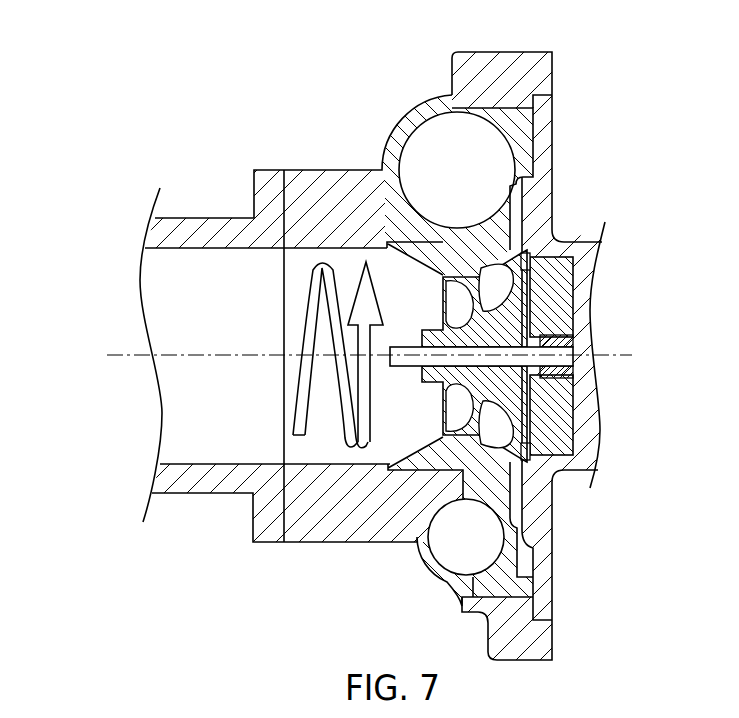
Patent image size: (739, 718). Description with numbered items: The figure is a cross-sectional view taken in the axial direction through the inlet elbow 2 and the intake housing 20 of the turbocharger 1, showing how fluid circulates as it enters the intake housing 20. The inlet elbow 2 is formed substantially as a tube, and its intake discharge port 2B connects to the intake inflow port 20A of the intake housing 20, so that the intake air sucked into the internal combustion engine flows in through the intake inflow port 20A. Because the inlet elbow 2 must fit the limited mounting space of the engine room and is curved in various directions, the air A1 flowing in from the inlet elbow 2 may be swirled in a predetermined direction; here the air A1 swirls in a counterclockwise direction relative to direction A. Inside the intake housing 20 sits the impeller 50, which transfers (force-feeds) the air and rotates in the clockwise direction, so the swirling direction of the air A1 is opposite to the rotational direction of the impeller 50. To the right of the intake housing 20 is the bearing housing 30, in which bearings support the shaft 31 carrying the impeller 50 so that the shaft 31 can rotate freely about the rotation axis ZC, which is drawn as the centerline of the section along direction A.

The turbocharger 1 is at (415, 76).
The inlet elbow 2 is at (197, 214).
The intake housing 20 is at (387, 139).
The air A1 is at (299, 310).
The rotation axis ZC is at (133, 351).
The direction A is at (93, 355).
The impeller 50 is at (441, 396).
The intake discharge port 2B is at (226, 411).
The intake inflow port 20A is at (313, 439).
The shaft 31 is at (588, 350).
The bearing housing 30 is at (558, 524).